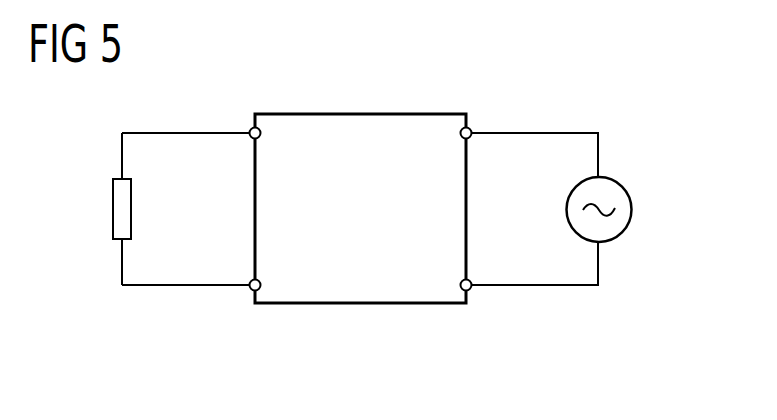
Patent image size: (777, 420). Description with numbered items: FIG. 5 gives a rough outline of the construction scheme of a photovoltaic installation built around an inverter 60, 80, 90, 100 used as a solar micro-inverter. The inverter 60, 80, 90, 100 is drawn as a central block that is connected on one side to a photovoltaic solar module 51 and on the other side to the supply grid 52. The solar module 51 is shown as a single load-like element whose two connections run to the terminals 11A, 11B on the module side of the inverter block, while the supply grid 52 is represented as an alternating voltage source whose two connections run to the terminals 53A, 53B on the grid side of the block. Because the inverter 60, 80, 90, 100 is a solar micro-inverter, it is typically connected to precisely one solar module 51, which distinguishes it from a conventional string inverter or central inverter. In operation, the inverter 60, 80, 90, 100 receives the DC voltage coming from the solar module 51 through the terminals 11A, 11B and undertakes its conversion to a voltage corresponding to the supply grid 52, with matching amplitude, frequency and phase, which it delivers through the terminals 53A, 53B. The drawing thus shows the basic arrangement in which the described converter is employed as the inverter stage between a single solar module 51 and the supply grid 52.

The first load-side terminal 11A is at (250, 129).
The second load-side terminal 11B is at (250, 289).
The first source-side terminal 53A is at (470, 129).
The second source-side terminal 53B is at (470, 289).
The photovoltaic solar module 51 is at (113, 206).
The supply grid 52 is at (632, 209).
The inverter 60 is at (360, 255).
The inverter 80 is at (360, 255).
The inverter 90 is at (360, 255).
The inverter 100 is at (358, 303).